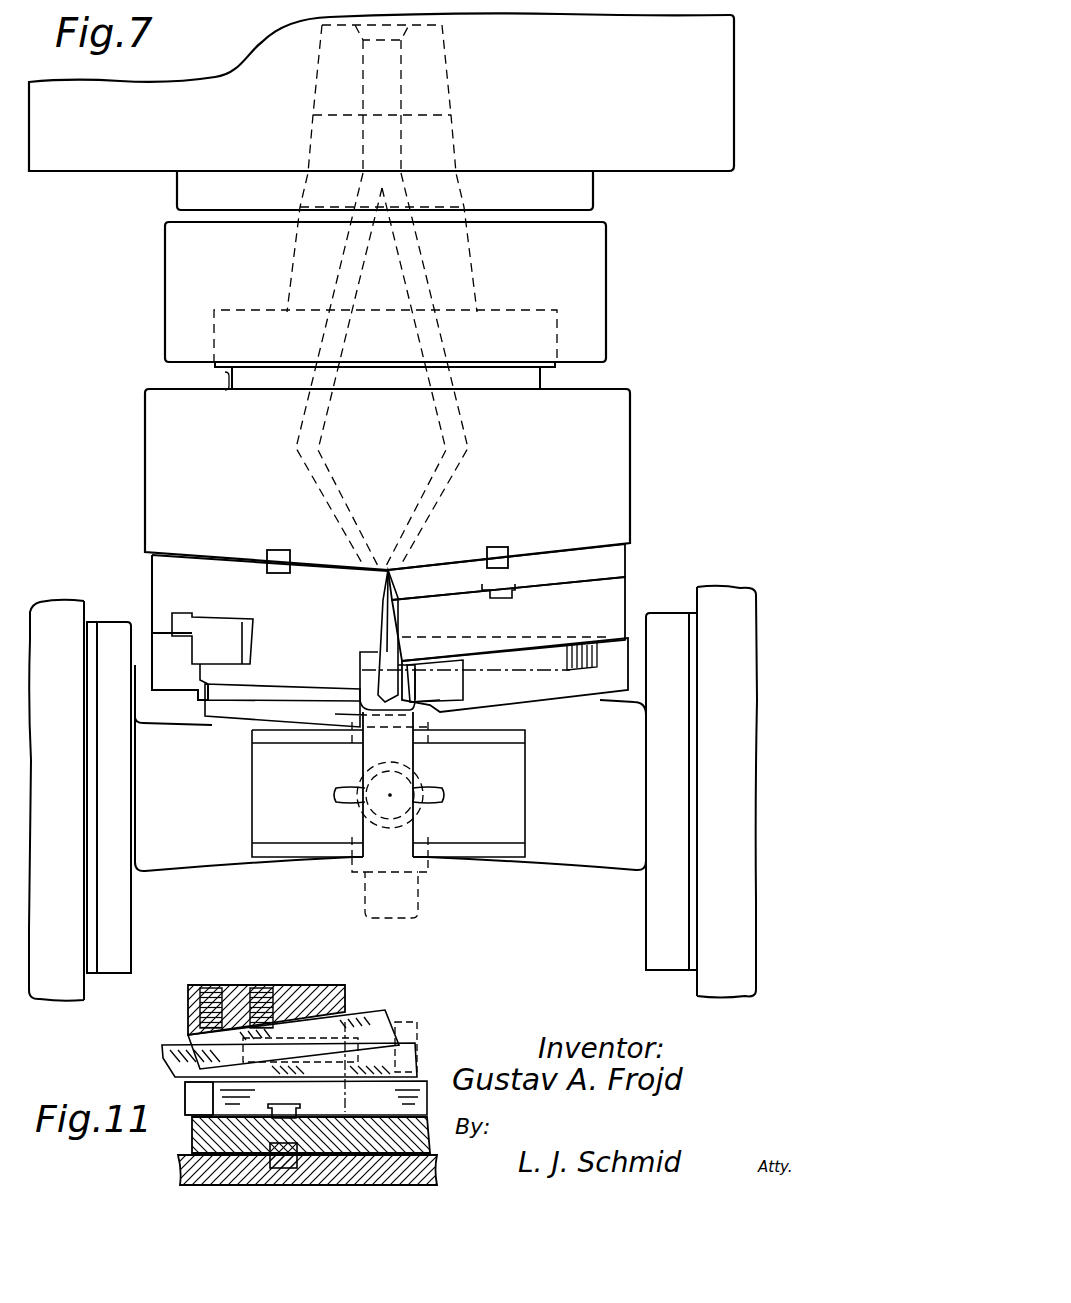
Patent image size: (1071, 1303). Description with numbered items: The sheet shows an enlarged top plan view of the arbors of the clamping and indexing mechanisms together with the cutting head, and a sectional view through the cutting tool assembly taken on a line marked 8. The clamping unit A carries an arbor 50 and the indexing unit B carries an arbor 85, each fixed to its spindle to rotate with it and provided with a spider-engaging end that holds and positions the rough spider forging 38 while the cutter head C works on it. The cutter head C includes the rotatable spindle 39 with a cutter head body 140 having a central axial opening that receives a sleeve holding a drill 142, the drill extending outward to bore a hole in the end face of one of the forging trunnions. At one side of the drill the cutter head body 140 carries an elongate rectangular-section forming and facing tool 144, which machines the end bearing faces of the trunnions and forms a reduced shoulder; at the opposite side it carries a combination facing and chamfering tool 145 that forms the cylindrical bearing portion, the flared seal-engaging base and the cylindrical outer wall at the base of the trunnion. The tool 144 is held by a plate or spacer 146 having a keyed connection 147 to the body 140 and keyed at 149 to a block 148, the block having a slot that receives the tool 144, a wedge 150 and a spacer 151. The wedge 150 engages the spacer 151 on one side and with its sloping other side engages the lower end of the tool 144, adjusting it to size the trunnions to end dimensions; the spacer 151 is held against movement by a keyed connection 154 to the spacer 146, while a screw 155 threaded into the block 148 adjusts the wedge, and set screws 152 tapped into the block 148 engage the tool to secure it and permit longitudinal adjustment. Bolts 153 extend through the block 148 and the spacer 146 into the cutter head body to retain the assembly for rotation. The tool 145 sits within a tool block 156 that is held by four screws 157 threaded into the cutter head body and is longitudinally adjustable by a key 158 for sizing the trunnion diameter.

In FIG. 7, the rotatable spindle 39 is at (592, 196).
In FIG. 7, the cutter head body 140 is at (632, 487).
In FIG. 11, the cutter head body 140 is at (190, 1172).
In FIG. 7, the plate or spacer 146 is at (615, 557).
In FIG. 11, the plate or spacer 146 is at (193, 1138).
In FIG. 7, the keyed connection 147 is at (498, 547).
In FIG. 11, the keyed connection 147 is at (297, 1150).
In FIG. 7, the block 148 is at (617, 603).
In FIG. 11, the block 148 is at (318, 987).
In FIG. 7, the key 149 is at (512, 595).
In FIG. 11, the key 149 is at (296, 1108).
In FIG. 7, the forming and facing tool 144 is at (585, 668).
In FIG. 11, the forming and facing tool 144 is at (377, 1007).
In FIG. 7, the bolts 153 is at (465, 688).
In FIG. 7, the drill 142 is at (395, 657).
In FIG. 7, the tool block 156 is at (168, 577).
In FIG. 7, the key 158 is at (280, 550).
In FIG. 7, the screws 157 is at (195, 650).
In FIG. 7, the combination facing and chamfering tool 145 is at (247, 718).
In FIG. 7, the section line 8 is at (632, 707).
In FIG. 7, the arbor 50 is at (390, 783).
In FIG. 7, the arbor 85 is at (505, 857).
In FIG. 7, the rough spider forging 38 is at (427, 880).
In FIG. 7, the clamping unit A is at (40, 602).
In FIG. 7, the indexing unit B is at (740, 584).
In FIG. 7, the cutter head C is at (130, 437).
In FIG. 11, the spacer 151 is at (306, 1098).
In FIG. 11, the keyed connection 154 is at (270, 1108).
In FIG. 11, the wedge 150 is at (408, 1053).
In FIG. 11, the screw 155 is at (407, 1020).
In FIG. 11, the screws 152 is at (260, 985).